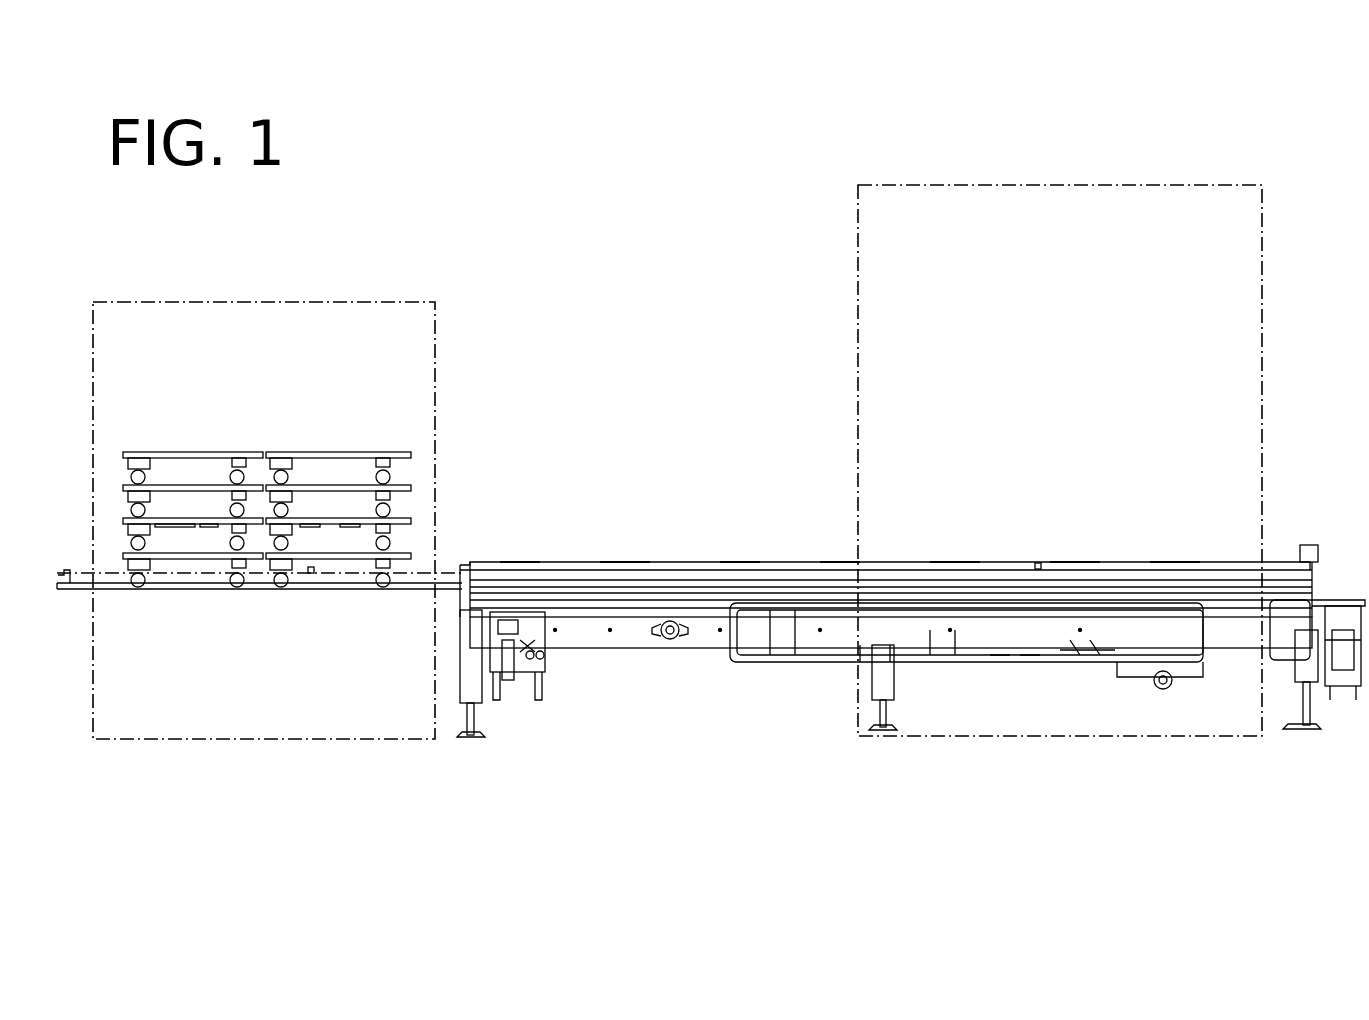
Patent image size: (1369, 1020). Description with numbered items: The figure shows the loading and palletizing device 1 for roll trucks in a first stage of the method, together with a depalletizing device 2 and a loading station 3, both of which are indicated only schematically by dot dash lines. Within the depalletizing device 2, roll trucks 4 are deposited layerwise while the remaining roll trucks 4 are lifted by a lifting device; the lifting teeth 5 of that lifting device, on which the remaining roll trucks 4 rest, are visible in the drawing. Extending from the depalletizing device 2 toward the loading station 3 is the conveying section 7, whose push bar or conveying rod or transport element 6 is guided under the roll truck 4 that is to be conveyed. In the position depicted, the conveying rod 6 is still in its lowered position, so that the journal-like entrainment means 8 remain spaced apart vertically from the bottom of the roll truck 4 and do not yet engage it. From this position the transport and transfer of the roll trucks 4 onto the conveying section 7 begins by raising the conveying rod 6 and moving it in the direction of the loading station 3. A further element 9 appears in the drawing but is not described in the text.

The loading and palletizing device 1 is at (911, 573).
The depalletizing device 2 is at (413, 340).
The loading station 3 is at (1243, 219).
The roll truck 4 is at (245, 452).
The lifting teeth 5 is at (302, 528).
The conveying rod 6 is at (422, 577).
The conveying section 7 is at (582, 630).
The journal-like entrainment means 8 is at (313, 568).
The lifting device 9 is at (510, 652).